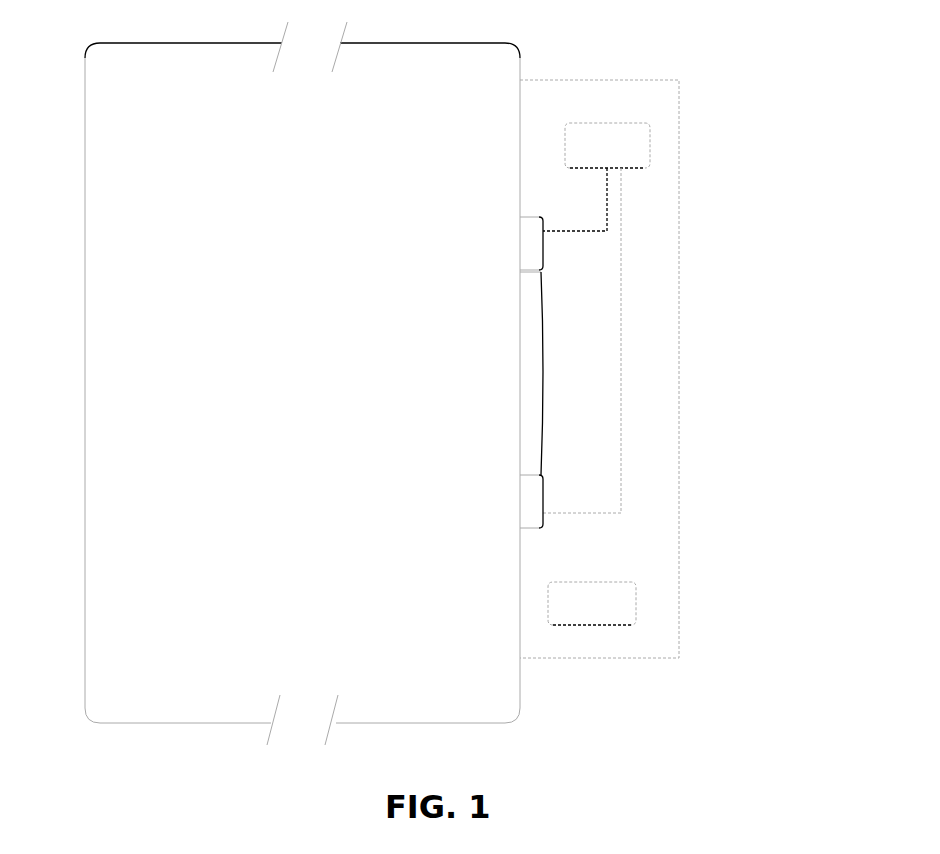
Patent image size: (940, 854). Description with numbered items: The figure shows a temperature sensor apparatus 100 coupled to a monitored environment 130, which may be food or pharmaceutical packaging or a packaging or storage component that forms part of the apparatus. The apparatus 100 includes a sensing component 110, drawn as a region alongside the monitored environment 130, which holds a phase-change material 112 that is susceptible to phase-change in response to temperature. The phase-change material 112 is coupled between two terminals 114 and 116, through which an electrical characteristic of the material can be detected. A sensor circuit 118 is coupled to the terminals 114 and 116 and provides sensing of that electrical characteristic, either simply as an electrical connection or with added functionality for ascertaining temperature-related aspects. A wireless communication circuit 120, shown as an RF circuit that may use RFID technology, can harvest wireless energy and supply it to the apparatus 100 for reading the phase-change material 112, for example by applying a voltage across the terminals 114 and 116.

The temperature sensor apparatus 100 is at (850, 60).
The sensing component 110 is at (654, 80).
The phase-change material 112 is at (544, 363).
The terminal 114 is at (543, 247).
The terminal 116 is at (543, 491).
The sensor circuit 118 is at (614, 123).
The wireless communication circuit 120 is at (600, 582).
The monitored environment 130 is at (462, 43).